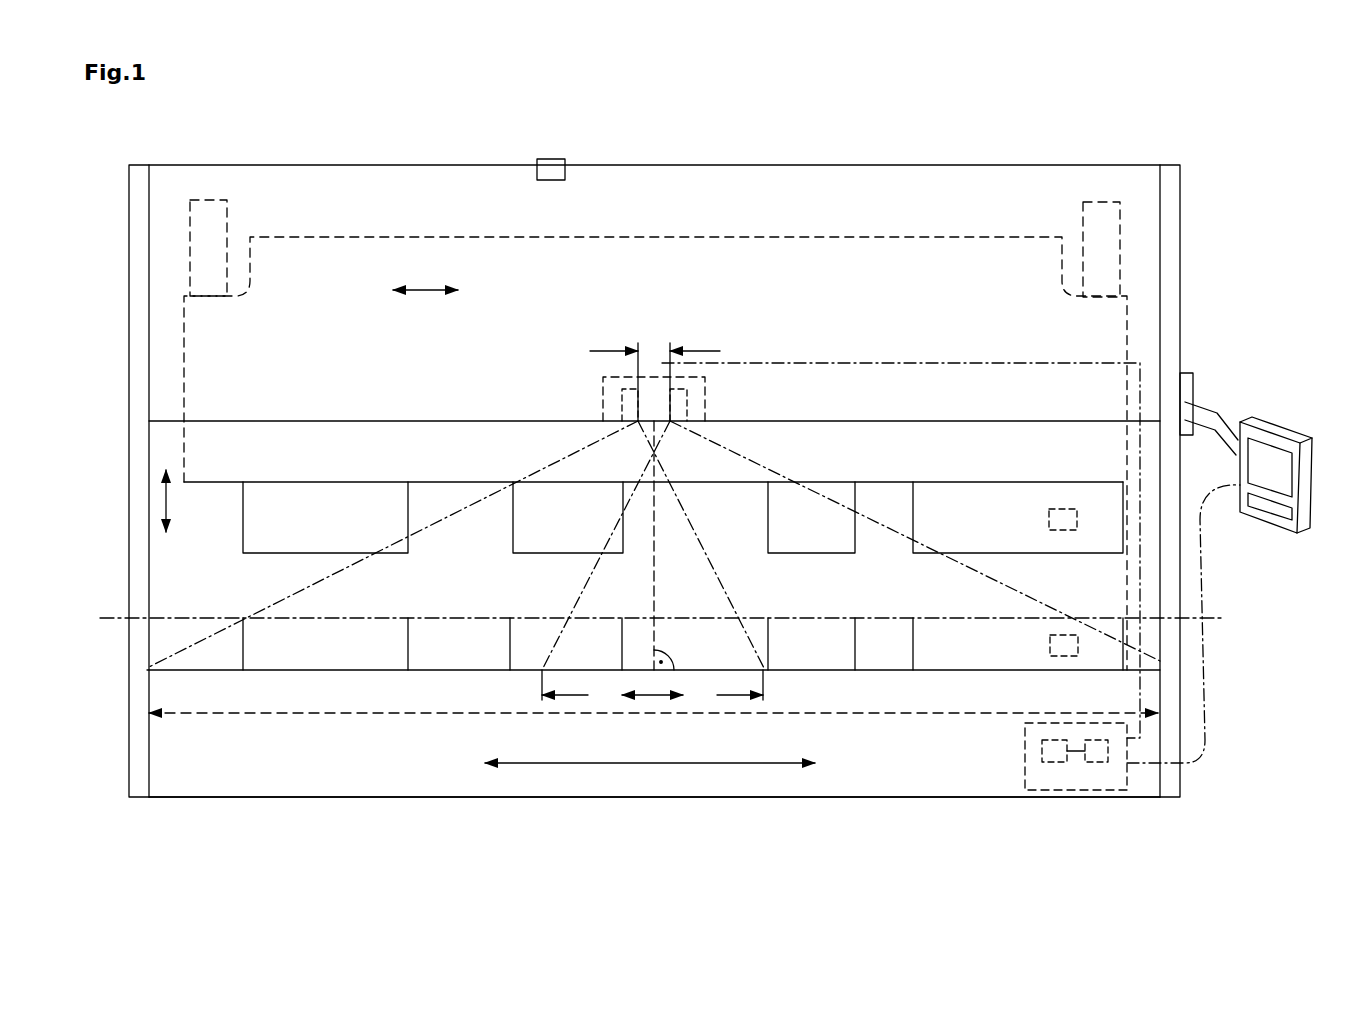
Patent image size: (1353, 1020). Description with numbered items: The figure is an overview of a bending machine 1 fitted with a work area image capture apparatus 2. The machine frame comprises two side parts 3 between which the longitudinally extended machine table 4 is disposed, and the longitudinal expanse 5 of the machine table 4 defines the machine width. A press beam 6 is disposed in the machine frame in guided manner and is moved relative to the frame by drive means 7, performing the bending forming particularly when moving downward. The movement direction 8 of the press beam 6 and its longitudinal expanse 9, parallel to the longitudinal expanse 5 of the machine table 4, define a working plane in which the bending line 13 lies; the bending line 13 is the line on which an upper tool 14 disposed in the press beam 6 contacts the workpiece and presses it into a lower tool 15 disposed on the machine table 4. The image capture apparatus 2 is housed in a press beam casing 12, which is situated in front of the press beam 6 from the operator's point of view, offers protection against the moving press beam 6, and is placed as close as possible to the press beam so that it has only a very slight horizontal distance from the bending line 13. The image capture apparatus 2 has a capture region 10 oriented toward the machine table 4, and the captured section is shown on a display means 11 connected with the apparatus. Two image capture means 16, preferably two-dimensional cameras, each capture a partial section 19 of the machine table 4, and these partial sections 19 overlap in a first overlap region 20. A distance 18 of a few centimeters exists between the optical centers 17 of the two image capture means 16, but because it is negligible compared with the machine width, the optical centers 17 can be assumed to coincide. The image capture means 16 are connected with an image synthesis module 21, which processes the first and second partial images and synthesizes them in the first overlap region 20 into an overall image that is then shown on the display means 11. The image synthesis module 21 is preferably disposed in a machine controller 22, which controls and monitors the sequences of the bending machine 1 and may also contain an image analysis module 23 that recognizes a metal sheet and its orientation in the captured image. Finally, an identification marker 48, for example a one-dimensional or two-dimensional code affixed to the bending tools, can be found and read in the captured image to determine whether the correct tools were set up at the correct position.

The bending machine 1 is at (1177, 148).
The work area image capture apparatus 2 is at (603, 355).
The side parts 3 is at (140, 258).
The machine table 4 is at (215, 770).
The longitudinal expanse of the machine table 5 is at (528, 768).
The press beam 6 is at (910, 280).
The drive means 7 is at (207, 222).
The movement direction of the press beam 8 is at (160, 502).
The longitudinal expanse of the press beam 9 is at (427, 288).
The capture region 10 is at (860, 716).
The display means 11 is at (1270, 408).
The press beam casing 12 is at (845, 205).
The bending line 13 is at (1202, 618).
The upper tool 14 is at (232, 540).
The lower tool 15 is at (228, 650).
The image capture means 16 is at (622, 405).
The optical centers 17 is at (633, 430).
The distance 18 is at (656, 343).
The partial section 19 is at (573, 703).
The first overlap region 20 is at (655, 703).
The image synthesis module 21 is at (1097, 772).
The machine controller 22 is at (1035, 783).
The image analysis module 23 is at (1053, 772).
The identification marker 48 is at (1065, 515).